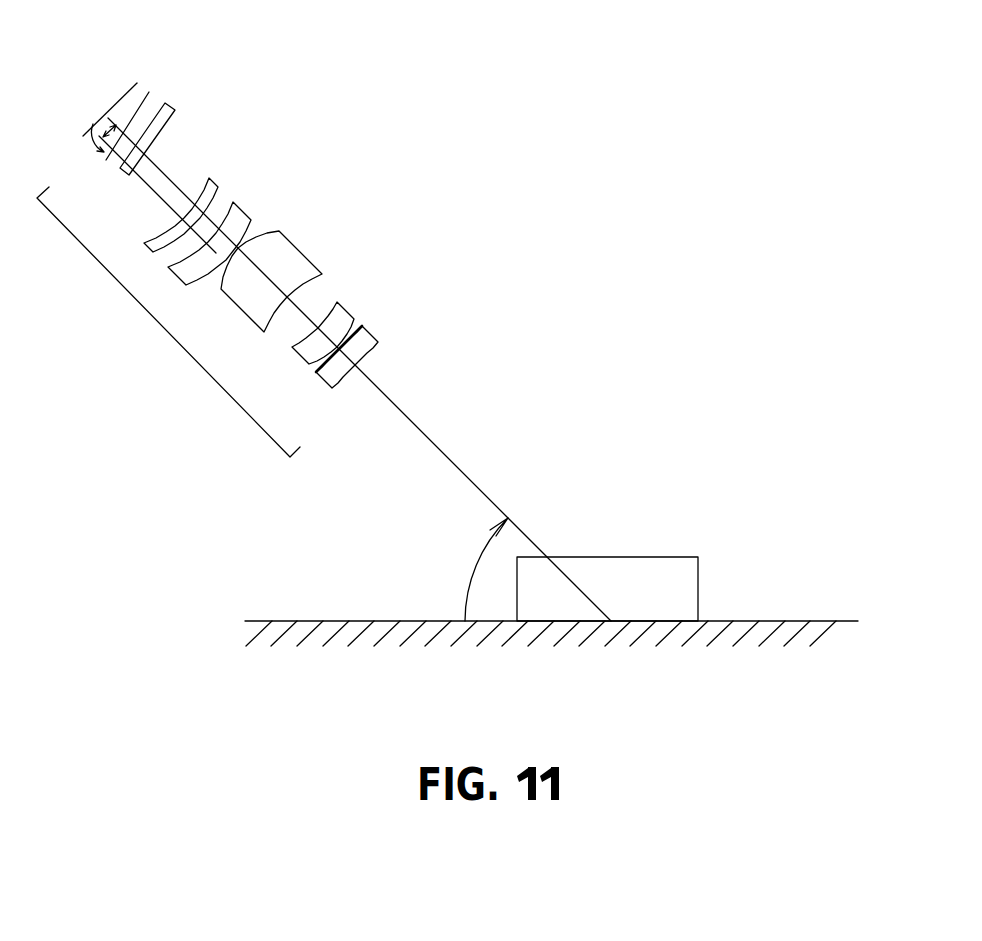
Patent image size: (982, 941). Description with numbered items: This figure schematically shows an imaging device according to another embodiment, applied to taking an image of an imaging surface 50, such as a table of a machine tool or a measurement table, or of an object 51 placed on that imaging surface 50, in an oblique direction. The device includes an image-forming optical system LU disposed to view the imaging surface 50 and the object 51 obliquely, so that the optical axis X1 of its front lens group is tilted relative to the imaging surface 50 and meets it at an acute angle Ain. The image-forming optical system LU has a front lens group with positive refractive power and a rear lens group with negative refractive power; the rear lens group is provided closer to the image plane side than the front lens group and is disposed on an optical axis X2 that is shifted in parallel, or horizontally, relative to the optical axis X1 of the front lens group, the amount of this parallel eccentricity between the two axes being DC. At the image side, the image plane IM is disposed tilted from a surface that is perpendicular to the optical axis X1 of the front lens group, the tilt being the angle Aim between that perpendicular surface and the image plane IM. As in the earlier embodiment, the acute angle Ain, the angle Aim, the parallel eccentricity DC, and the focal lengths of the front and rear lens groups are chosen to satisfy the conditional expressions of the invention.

The imaging surface 50 is at (778, 621).
The object 51 is at (670, 567).
The image-forming optical system LU is at (207, 317).
The image plane IM is at (145, 97).
The optical axis of the front lens group X1 is at (164, 173).
The optical axis of the rear lens group X2 is at (151, 188).
The parallel eccentricity DC is at (104, 124).
The angle between the perpendicular surface and the image plane Aim is at (86, 149).
The acute angle between the imaging surface and the optical axis Ain is at (465, 569).